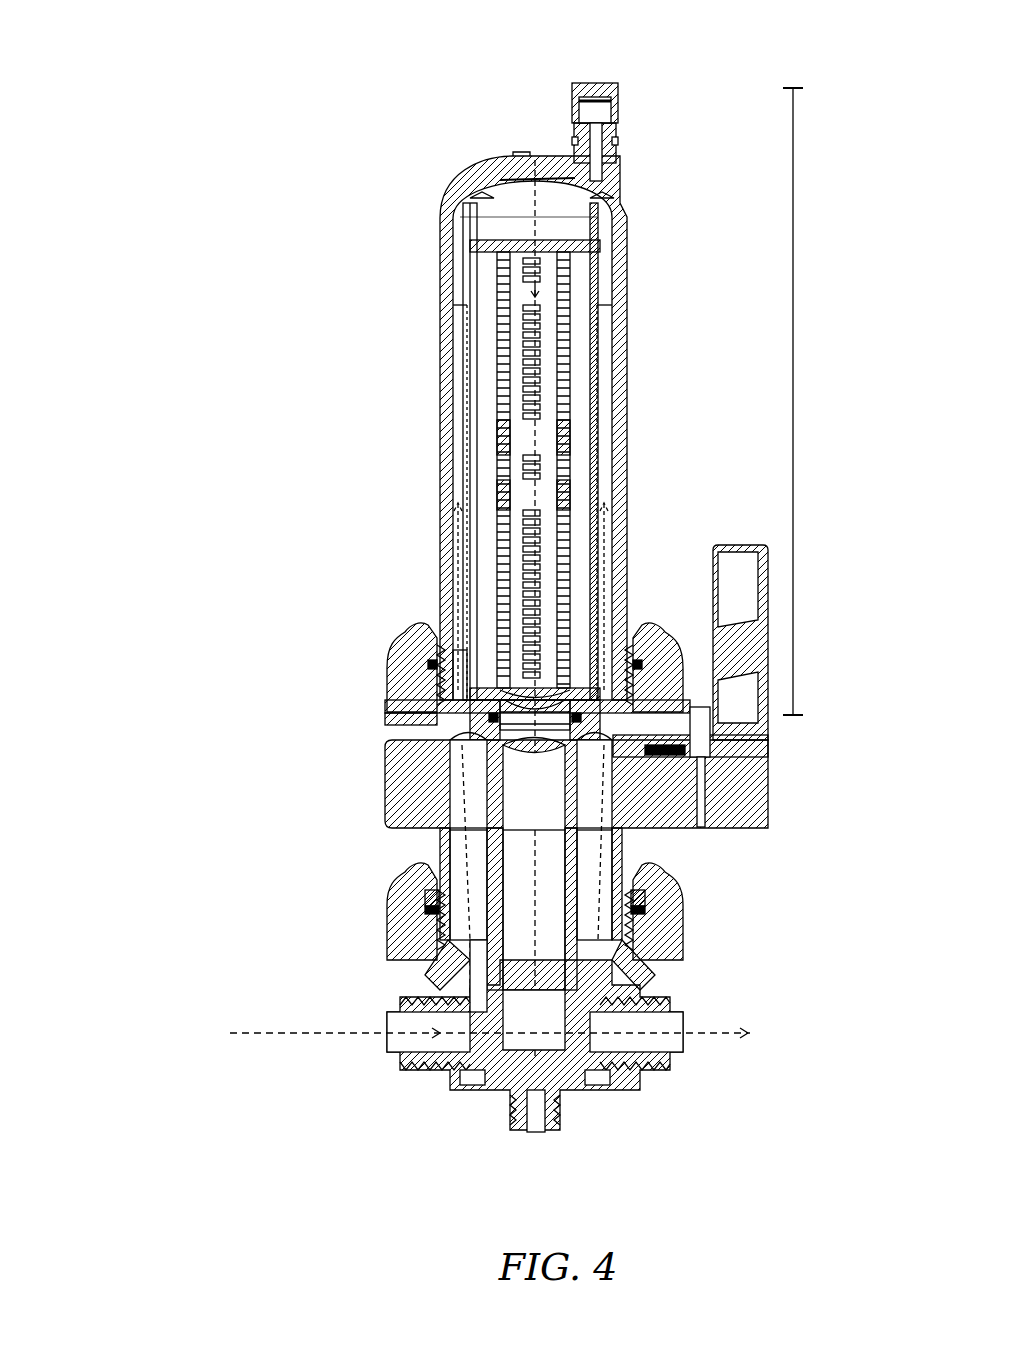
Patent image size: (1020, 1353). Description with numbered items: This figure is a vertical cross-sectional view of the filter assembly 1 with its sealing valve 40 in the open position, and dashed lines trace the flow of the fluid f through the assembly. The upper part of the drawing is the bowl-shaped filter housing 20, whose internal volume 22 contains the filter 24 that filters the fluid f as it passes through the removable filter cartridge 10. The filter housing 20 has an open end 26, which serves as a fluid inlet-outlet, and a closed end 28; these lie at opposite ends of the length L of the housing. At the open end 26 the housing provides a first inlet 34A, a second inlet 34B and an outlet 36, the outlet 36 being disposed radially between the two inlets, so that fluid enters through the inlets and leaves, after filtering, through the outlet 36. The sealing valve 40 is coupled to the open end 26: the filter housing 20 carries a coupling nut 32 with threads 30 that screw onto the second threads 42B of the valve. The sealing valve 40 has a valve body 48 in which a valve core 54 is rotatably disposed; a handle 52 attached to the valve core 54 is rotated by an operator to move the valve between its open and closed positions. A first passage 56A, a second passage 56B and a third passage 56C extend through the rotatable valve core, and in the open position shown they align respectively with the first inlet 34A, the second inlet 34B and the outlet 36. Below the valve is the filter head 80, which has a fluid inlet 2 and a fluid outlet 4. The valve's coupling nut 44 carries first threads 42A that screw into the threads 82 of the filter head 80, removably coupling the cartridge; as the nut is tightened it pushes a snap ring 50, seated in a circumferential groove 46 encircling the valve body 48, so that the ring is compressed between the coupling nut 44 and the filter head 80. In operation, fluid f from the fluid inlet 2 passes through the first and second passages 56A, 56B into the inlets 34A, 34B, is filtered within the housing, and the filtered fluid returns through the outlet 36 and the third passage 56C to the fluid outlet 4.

The filter assembly 1 is at (463, 597).
The fluid inlet 2 is at (395, 1027).
The fluid outlet 4 is at (683, 1025).
The removable filter cartridge 10 is at (463, 618).
The filter housing 20 is at (465, 563).
The internal volume 22 is at (500, 200).
The filter 24 is at (470, 242).
The open end 26 is at (440, 737).
The closed end 28 is at (535, 176).
The threads 30 is at (385, 708).
The coupling nut 32 is at (388, 672).
The first inlet 34A is at (457, 662).
The second inlet 34B is at (612, 645).
The outlet 36 is at (535, 712).
The sealing valve 40 is at (463, 857).
The first threads 42A is at (410, 953).
The second threads 42B is at (430, 740).
The coupling nut 44 is at (680, 927).
The circumferential groove 46 is at (430, 897).
The valve body 48 is at (680, 840).
The snap ring 50 is at (647, 900).
The handle 52 is at (770, 830).
The valve core 54 is at (520, 793).
The first passage 56A is at (455, 800).
The second passage 56B is at (627, 827).
The third passage 56C is at (440, 822).
The filter head 80 is at (440, 1100).
The threads 82 is at (640, 947).
The length L is at (795, 230).
The fluid f is at (315, 1040).